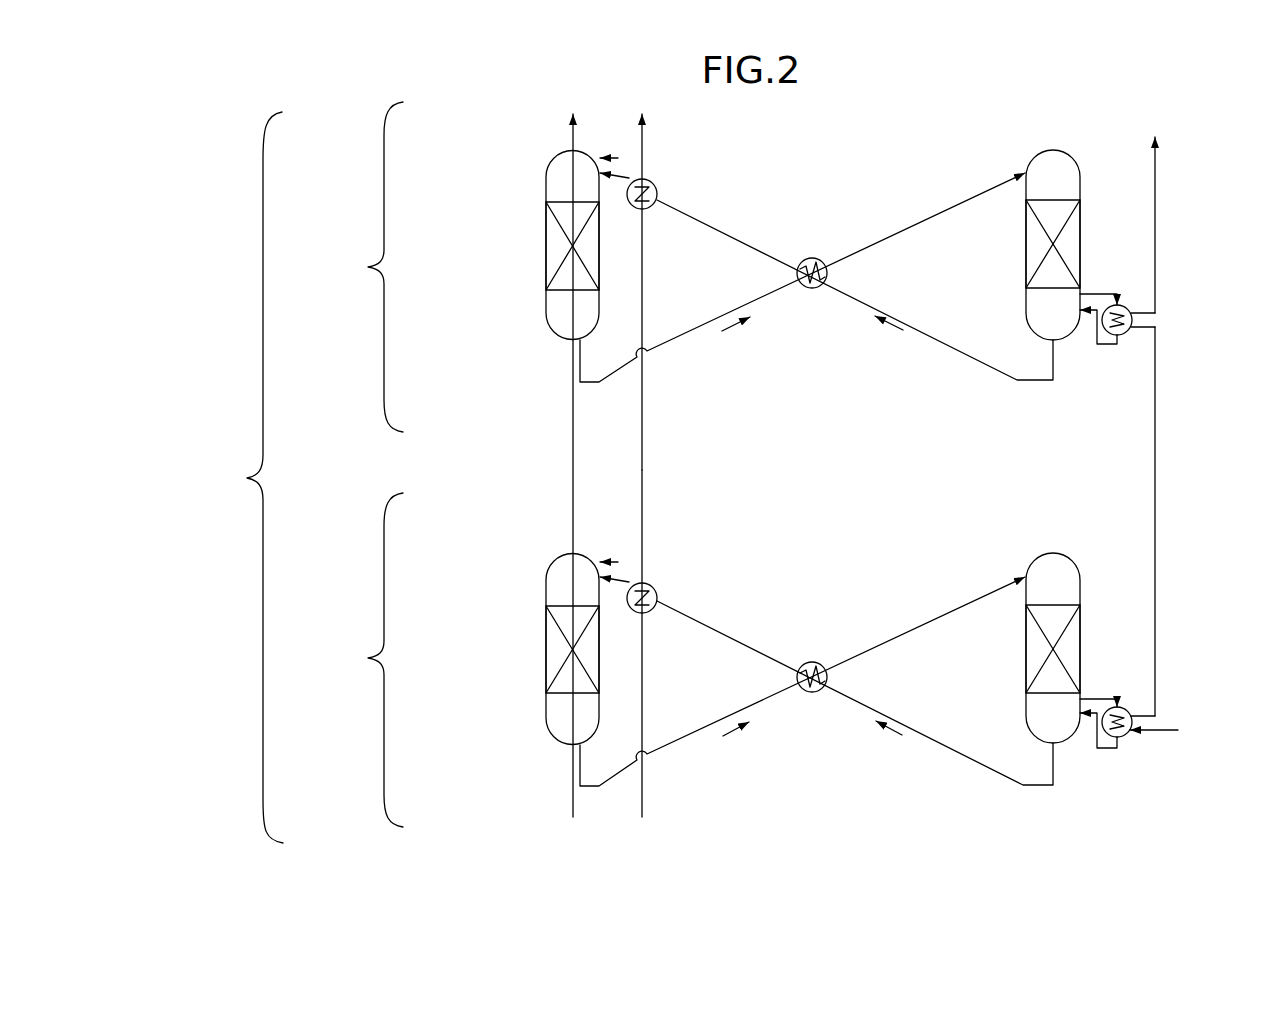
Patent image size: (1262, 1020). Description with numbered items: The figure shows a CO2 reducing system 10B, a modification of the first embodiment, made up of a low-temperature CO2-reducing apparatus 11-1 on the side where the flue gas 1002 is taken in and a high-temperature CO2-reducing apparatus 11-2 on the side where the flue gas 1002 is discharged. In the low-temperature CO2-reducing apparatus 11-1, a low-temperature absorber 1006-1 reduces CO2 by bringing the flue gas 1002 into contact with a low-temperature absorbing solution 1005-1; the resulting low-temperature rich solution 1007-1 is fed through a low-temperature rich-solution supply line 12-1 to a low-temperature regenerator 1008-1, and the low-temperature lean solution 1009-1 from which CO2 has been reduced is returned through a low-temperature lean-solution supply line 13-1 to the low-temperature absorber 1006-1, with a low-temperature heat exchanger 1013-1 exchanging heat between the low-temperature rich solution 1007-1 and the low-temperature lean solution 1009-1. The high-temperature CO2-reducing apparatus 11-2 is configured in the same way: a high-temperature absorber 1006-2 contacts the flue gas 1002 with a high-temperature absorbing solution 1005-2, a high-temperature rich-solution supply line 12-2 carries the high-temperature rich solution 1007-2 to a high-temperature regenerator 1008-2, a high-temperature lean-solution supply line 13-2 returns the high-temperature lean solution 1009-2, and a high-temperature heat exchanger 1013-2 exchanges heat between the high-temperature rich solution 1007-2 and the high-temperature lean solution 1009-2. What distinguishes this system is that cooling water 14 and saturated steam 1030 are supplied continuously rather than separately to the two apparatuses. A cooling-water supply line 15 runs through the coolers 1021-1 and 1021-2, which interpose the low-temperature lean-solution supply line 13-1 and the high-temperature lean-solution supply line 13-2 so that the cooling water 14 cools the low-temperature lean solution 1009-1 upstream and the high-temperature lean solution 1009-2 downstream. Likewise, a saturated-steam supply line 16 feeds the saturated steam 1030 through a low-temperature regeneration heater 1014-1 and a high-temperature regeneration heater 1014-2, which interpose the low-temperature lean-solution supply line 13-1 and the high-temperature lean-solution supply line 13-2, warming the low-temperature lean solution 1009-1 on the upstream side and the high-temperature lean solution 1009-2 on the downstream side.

The CO2 reducing system 10B is at (247, 477).
The low-temperature CO2-reducing apparatus 11-1 is at (367, 660).
The high-temperature CO2-reducing apparatus 11-2 is at (367, 267).
The flue gas 1002 is at (562, 478).
The cooling water 14 is at (652, 792).
The cooling-water supply line 15 is at (643, 474).
The saturated-steam supply line 16 is at (1155, 475).
The low-temperature absorbing solution 1005-1 is at (618, 562).
The high-temperature absorbing solution 1005-2 is at (618, 158).
The low-temperature absorber 1006-1 is at (546, 590).
The high-temperature absorber 1006-2 is at (546, 190).
The cooler 1021-1 is at (652, 588).
The cooler 1021-2 is at (652, 182).
The low-temperature rich-solution supply line 12-1 is at (697, 735).
The high-temperature rich-solution supply line 12-2 is at (717, 325).
The low-temperature rich solution 1007-1 is at (735, 732).
The high-temperature rich solution 1007-2 is at (726, 332).
The low-temperature heat exchanger 1013-1 is at (817, 662).
The high-temperature heat exchanger 1013-2 is at (815, 258).
The low-temperature lean-solution supply line 13-1 is at (1000, 773).
The high-temperature lean-solution supply line 13-2 is at (1013, 375).
The low-temperature lean solution 1009-1 is at (893, 733).
The high-temperature lean solution 1009-2 is at (893, 331).
The low-temperature regenerator 1008-1 is at (1072, 560).
The high-temperature regenerator 1008-2 is at (1072, 158).
The low-temperature regeneration heater 1014-1 is at (1125, 738).
The high-temperature regeneration heater 1014-2 is at (1125, 336).
The saturated steam 1030 is at (1175, 728).